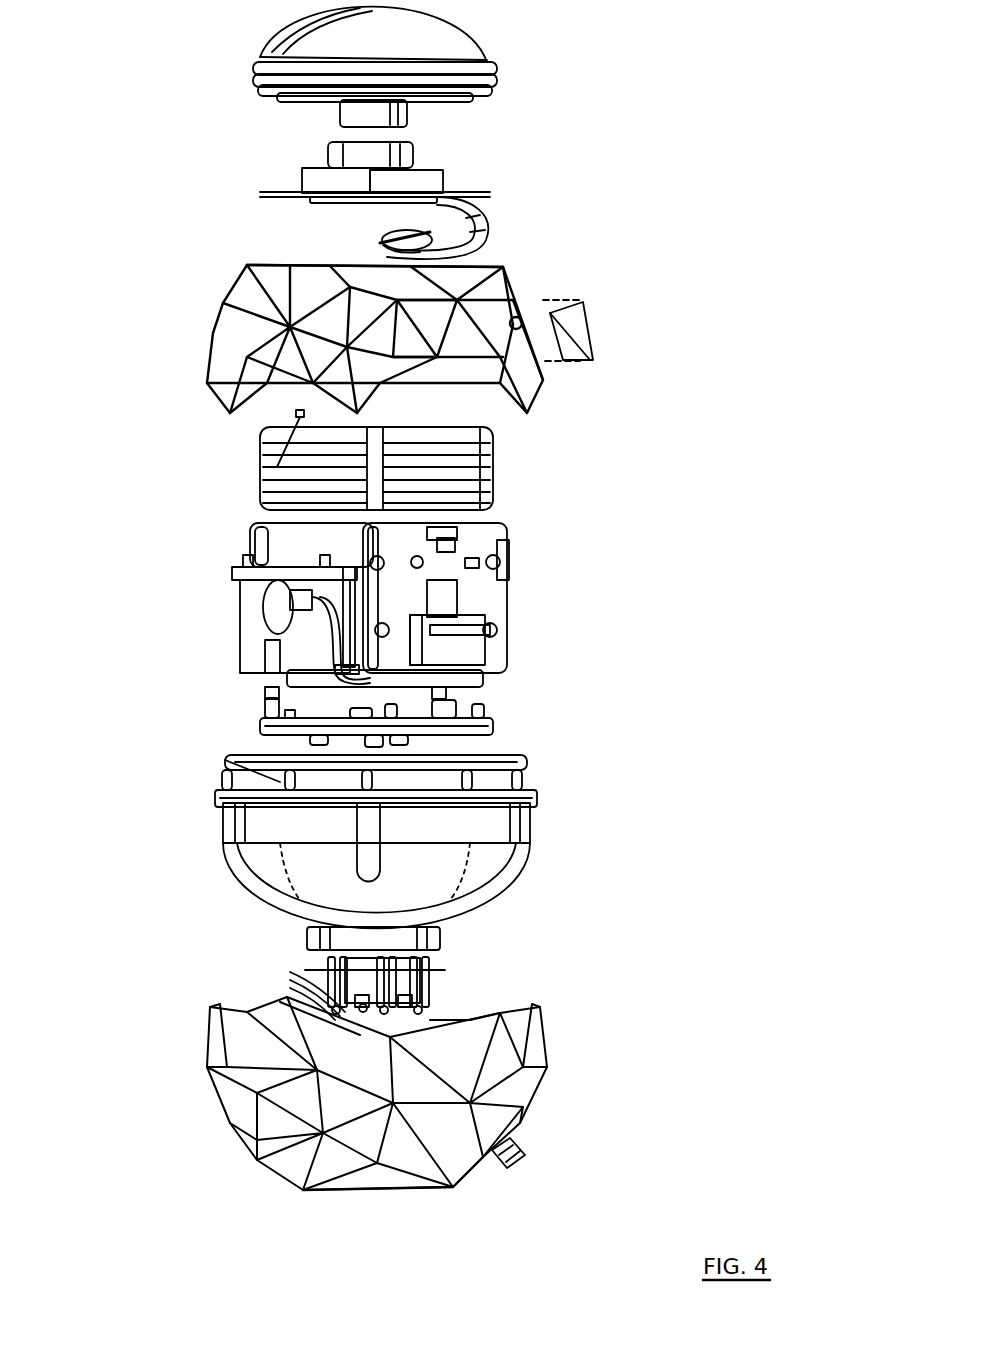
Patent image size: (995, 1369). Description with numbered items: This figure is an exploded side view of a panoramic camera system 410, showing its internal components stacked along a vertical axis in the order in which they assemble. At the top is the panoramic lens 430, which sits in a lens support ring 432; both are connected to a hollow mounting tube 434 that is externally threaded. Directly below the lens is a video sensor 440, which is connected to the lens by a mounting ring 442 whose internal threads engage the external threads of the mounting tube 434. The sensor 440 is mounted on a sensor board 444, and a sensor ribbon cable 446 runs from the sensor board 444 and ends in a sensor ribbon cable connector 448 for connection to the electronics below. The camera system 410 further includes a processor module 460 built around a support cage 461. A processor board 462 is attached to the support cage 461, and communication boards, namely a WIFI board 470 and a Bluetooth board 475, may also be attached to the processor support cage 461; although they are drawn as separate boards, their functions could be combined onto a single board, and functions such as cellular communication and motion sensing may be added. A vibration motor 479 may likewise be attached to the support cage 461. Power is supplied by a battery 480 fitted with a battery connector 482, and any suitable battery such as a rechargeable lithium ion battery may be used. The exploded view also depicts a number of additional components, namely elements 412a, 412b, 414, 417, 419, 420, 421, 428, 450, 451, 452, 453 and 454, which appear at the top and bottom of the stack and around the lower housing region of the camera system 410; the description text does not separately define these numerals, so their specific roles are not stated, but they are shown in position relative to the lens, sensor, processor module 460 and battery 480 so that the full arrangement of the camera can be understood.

The panoramic camera system 410 is at (145, 188).
The upper shell portion 412a is at (235, 355).
The lower shell portion 412b is at (210, 1107).
The shell tab 414 is at (585, 315).
The shell connector 417 is at (527, 1155).
The upper shell rim 419 is at (500, 265).
The lower shell rim 420 is at (407, 1197).
The connector assembly 421 is at (420, 1030).
The wires 428 is at (291, 989).
The panoramic lens 430 is at (423, 37).
The lens support ring 432 is at (490, 63).
The hollow mounting tube 434 is at (413, 110).
The video sensor 440 is at (427, 173).
The mounting ring 442 is at (330, 160).
The sensor board 444 is at (290, 194).
The sensor ribbon cable 446 is at (483, 217).
The sensor ribbon cable connector 448 is at (380, 227).
The housing bowl 450 is at (240, 870).
The housing ring 451 is at (215, 800).
The gasket 452 is at (280, 782).
The cover plate 453 is at (513, 757).
The housing neck 454 is at (450, 935).
The processor module 460 is at (175, 575).
The support cage 461 is at (400, 657).
The processor board 462 is at (260, 727).
The WIFI board 470 is at (490, 537).
The Bluetooth board 475 is at (267, 547).
The vibration motor 479 is at (273, 610).
The battery 480 is at (487, 437).
The battery connector 482 is at (297, 415).